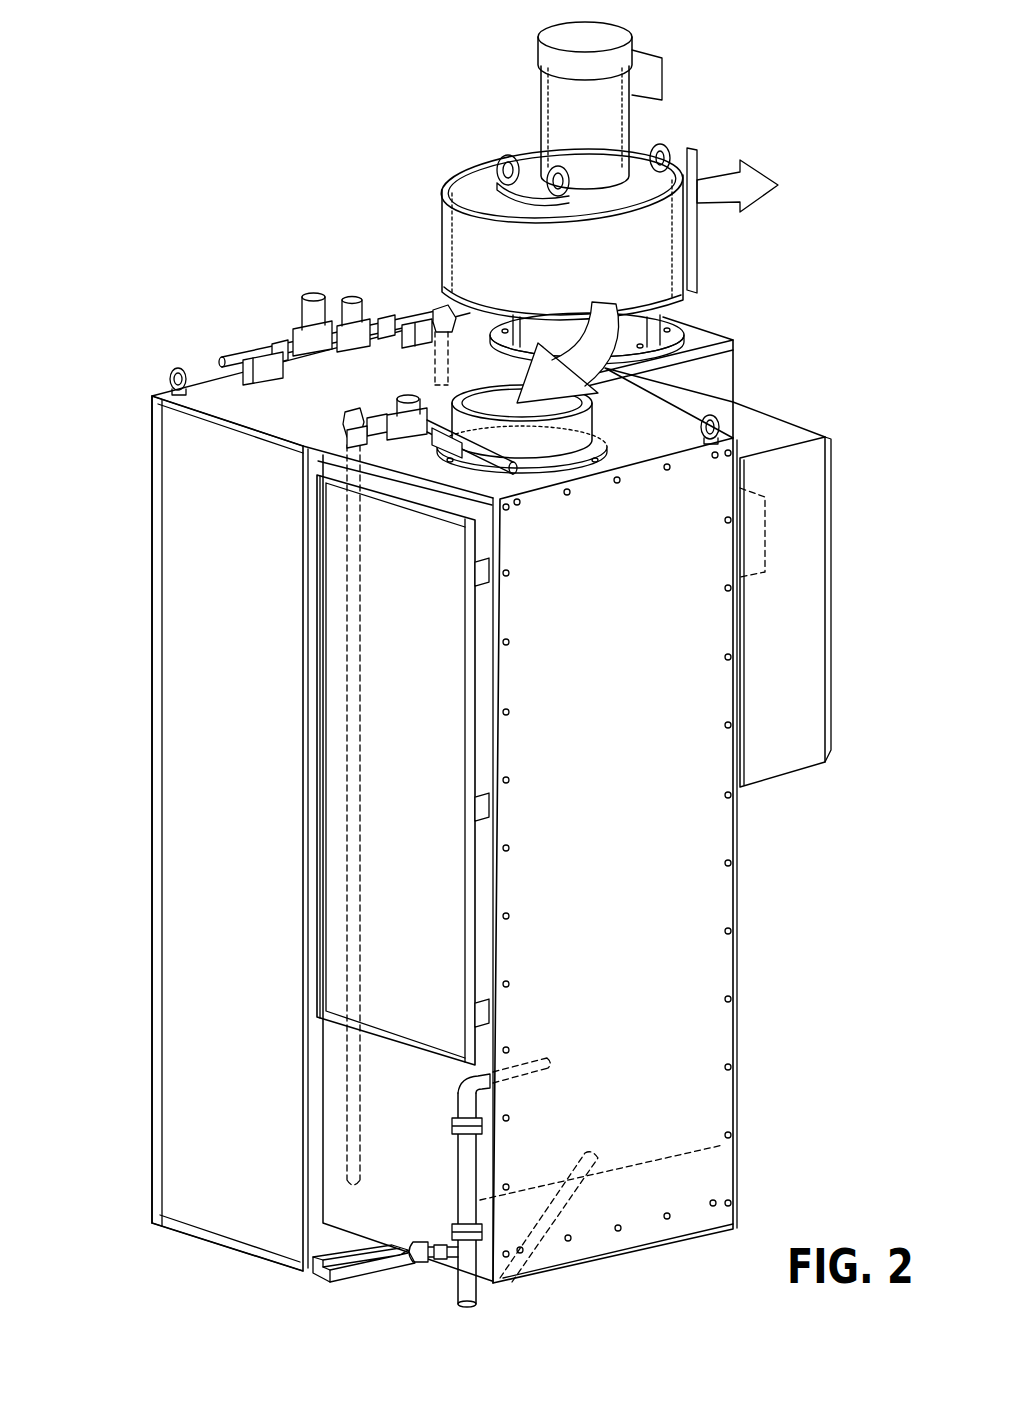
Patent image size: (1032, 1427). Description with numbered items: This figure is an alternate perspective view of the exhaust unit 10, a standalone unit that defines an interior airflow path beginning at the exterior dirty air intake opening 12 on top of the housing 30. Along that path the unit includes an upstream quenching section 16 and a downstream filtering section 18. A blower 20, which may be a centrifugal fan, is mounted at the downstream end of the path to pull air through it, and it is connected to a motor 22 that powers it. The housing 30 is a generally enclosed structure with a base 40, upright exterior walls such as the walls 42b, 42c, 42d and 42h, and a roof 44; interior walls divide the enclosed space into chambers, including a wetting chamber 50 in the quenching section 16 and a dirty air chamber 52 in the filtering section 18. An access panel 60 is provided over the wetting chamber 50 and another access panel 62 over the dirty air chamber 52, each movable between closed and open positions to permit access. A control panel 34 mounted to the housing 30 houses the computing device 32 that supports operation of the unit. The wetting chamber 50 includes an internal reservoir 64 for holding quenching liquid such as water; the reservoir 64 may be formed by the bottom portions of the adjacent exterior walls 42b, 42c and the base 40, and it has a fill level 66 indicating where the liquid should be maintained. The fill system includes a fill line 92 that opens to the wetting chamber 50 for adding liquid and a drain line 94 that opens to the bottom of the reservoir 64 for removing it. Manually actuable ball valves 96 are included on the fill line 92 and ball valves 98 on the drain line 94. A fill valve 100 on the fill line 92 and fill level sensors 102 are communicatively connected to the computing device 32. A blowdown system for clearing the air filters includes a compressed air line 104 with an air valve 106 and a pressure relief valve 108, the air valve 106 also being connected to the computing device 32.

The exhaust unit 10 is at (176, 221).
The dirty air intake opening 12 is at (518, 366).
The quenching section 16 is at (694, 918).
The filtering section 18 is at (188, 894).
The blower 20 is at (442, 232).
The motor 22 is at (540, 115).
The housing 30 is at (152, 532).
The computing device 32 is at (745, 557).
The control panel 34 is at (832, 476).
The base 40 is at (307, 1250).
The exterior wall 42b is at (706, 1040).
The exterior wall 42c is at (487, 948).
The exterior wall 42d is at (187, 1110).
The exterior wall 42h is at (713, 368).
The roof 44 is at (250, 407).
The wetting chamber 50 is at (786, 606).
The dirty air chamber 52 is at (188, 1042).
The access panel 60 is at (476, 900).
The access panel 62 is at (178, 1022).
The internal reservoir 64 is at (603, 1220).
The fill level 66 is at (688, 1160).
The fill line 92 is at (340, 825).
The drain line 94 is at (450, 1297).
The ball valves 96 is at (450, 443).
The ball valves 98 is at (433, 1262).
The fill valve 100 is at (405, 430).
The fill level sensors 102 is at (454, 1168).
The compressed air line 104 is at (424, 354).
The air valve 106 is at (342, 298).
The pressure relief valve 108 is at (287, 332).